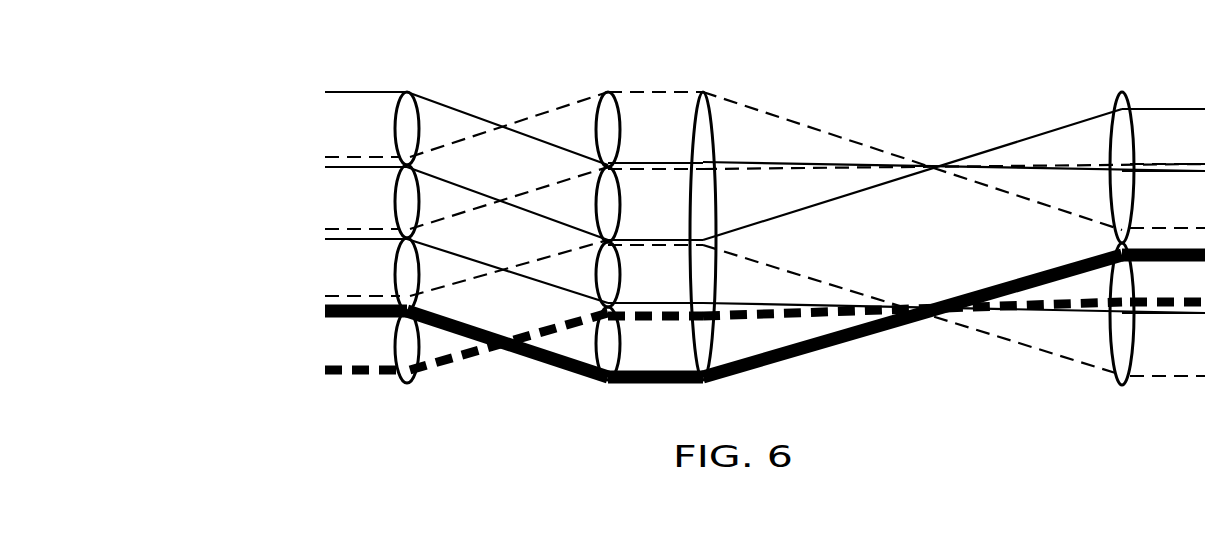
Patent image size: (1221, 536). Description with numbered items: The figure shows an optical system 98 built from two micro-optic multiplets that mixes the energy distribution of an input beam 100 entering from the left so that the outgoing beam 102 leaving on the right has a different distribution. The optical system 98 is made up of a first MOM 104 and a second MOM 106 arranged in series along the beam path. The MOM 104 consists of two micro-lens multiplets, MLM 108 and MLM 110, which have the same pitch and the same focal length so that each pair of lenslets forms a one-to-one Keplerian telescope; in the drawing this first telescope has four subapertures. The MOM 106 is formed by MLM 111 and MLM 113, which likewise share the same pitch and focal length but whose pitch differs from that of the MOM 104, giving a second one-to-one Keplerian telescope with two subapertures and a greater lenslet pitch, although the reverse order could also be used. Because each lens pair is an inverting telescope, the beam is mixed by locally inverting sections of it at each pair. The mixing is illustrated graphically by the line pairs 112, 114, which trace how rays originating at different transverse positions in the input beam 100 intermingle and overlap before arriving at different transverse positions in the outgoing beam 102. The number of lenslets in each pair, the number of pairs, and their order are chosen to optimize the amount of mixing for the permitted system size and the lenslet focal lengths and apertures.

The optical system 98 is at (361, 74).
The input beam 100 is at (289, 316).
The outgoing beam 102 is at (1175, 107).
The MOM 104 is at (524, 85).
The MOM 106 is at (965, 345).
The MLM 108 is at (407, 381).
The MLM 110 is at (607, 381).
The MLM 111 is at (705, 92).
The line pair 112 is at (836, 161).
The MLM 113 is at (1120, 92).
The line pair 114 is at (827, 199).